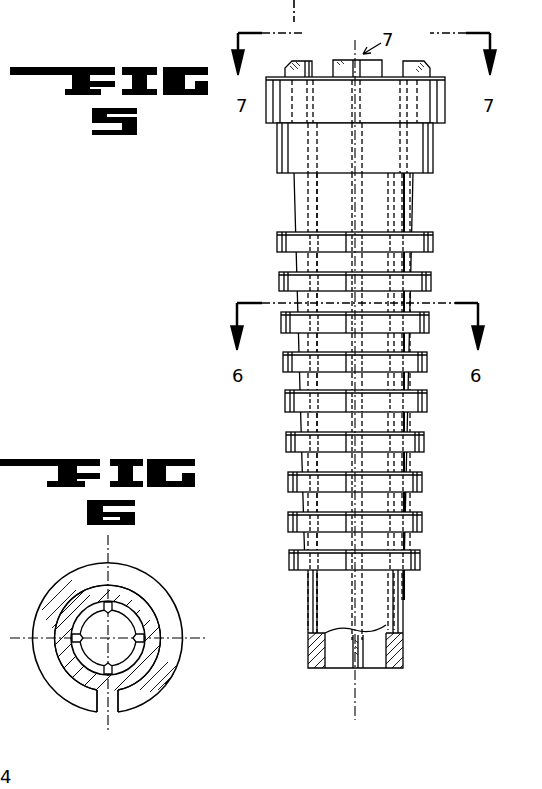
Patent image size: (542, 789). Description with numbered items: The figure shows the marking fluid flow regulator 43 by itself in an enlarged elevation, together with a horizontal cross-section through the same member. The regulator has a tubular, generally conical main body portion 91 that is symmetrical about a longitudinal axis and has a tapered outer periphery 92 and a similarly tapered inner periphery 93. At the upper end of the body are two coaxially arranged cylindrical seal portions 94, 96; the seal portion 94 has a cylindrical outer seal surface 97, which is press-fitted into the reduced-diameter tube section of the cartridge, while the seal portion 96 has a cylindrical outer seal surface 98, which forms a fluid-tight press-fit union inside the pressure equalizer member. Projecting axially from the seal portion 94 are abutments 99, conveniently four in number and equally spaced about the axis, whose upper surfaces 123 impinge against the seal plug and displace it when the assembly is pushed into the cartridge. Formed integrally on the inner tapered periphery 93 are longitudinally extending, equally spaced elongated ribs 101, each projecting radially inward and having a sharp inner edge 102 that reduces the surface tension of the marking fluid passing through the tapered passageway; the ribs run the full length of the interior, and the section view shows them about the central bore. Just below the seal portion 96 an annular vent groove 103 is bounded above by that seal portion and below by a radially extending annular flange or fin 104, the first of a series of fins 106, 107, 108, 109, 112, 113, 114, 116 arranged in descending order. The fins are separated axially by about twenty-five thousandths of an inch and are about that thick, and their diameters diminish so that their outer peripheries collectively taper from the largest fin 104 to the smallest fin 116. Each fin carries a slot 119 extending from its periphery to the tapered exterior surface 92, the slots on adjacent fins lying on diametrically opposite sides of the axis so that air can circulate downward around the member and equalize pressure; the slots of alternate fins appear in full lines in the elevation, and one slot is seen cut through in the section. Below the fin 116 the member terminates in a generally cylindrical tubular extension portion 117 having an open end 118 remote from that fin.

In FIG. 5, the marking fluid flow regulator 43 is at (492, 206).
In FIG. 5, the main body portion 91 is at (405, 226).
In FIG. 6, the main body portion 91 is at (145, 606).
In FIG. 5, the tapered outer periphery 92 is at (408, 415).
In FIG. 6, the tapered outer periphery 92 is at (160, 650).
In FIG. 5, the tapered inner periphery 93 is at (318, 432).
In FIG. 6, the tapered inner periphery 93 is at (140, 634).
In FIG. 5, the cylindrical seal portion 94 is at (432, 95).
In FIG. 5, the cylindrical seal portion 96 is at (425, 155).
In FIG. 5, the cylindrical outer seal surface 97 is at (446, 108).
In FIG. 5, the cylindrical outer seal surface 98 is at (376, 150).
In FIG. 5, the abutments 99 is at (289, 68).
In FIG. 5, the elongated ribs 101 is at (355, 62).
In FIG. 6, the elongated ribs 101 is at (132, 710).
In FIG. 5, the sharp inner edge 102 is at (405, 62).
In FIG. 6, the sharp inner edge 102 is at (85, 672).
In FIG. 5, the annular vent groove 103 is at (300, 200).
In FIG. 5, the annular flange or fin 104 is at (298, 245).
In FIG. 5, the fin 106 is at (298, 282).
In FIG. 5, the fin 107 is at (296, 324).
In FIG. 6, the fin 107 is at (143, 576).
In FIG. 5, the fin 108 is at (296, 362).
In FIG. 5, the fin 109 is at (305, 402).
In FIG. 5, the fin 112 is at (306, 442).
In FIG. 5, the fin 113 is at (308, 484).
In FIG. 5, the fin 114 is at (308, 524).
In FIG. 5, the fin 116 is at (310, 562).
In FIG. 5, the tubular extension portion 117 is at (400, 612).
In FIG. 5, the open end 118 is at (364, 660).
In FIG. 5, the slot 119 is at (360, 252).
In FIG. 6, the slot 119 is at (98, 712).
In FIG. 5, the upper surfaces 123 is at (307, 62).